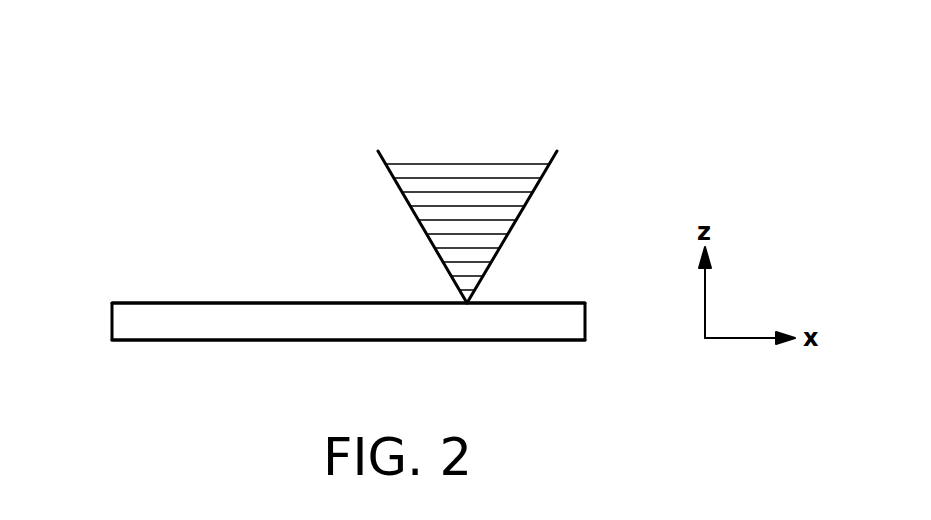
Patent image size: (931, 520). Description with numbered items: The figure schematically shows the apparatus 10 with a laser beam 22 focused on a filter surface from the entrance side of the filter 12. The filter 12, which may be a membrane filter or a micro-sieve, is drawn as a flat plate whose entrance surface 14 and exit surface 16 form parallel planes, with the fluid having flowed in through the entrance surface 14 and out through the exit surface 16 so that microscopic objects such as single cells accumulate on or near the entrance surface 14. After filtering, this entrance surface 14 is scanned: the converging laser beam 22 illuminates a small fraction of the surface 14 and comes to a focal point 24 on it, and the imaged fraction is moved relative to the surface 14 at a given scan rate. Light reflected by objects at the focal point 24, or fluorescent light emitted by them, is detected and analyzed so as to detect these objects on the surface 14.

The apparatus 10 is at (160, 142).
The filter 12 is at (112, 321).
The entrance surface 14 is at (124, 302).
The exit surface 16 is at (124, 341).
The laser beam 22 is at (405, 198).
The focal point 24 is at (467, 303).